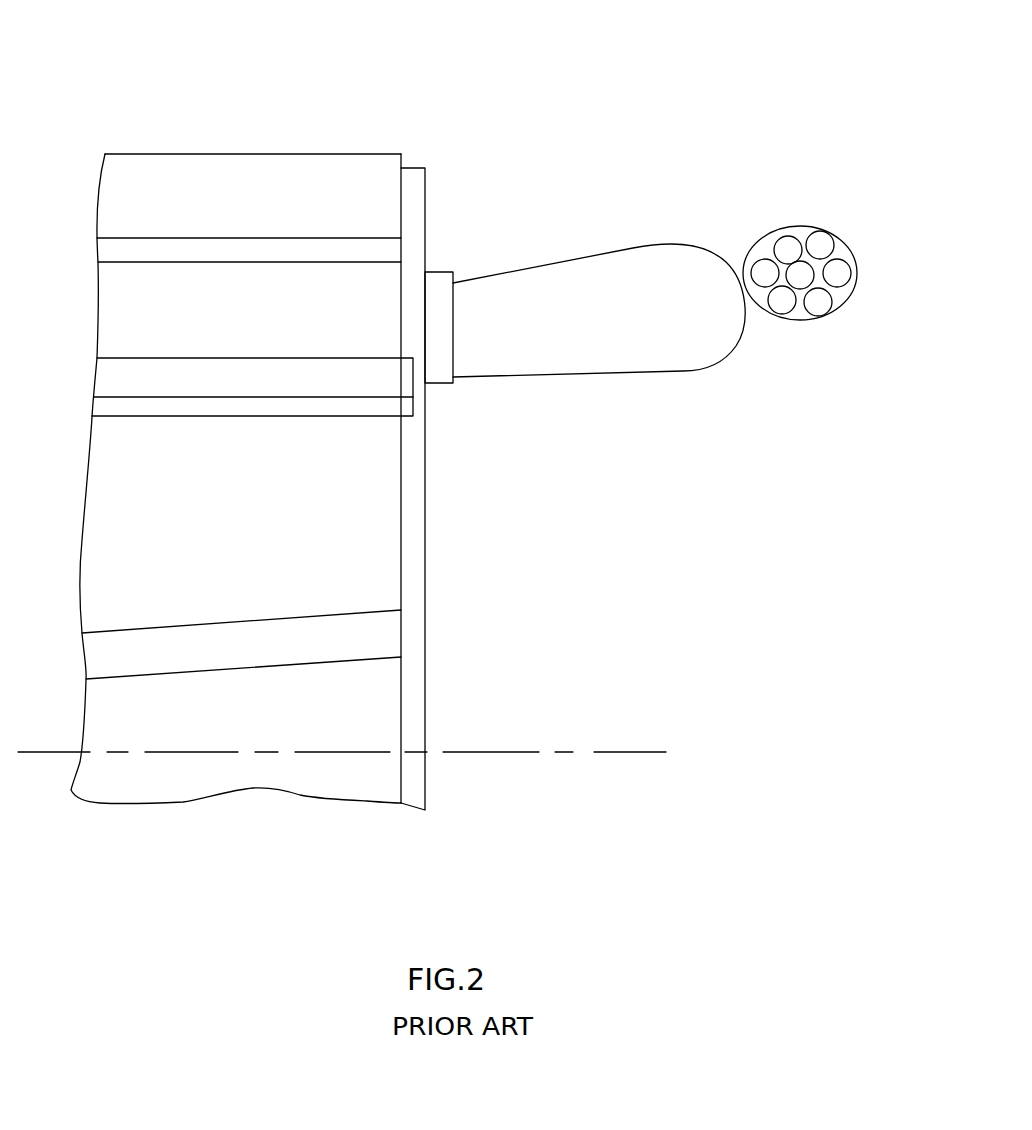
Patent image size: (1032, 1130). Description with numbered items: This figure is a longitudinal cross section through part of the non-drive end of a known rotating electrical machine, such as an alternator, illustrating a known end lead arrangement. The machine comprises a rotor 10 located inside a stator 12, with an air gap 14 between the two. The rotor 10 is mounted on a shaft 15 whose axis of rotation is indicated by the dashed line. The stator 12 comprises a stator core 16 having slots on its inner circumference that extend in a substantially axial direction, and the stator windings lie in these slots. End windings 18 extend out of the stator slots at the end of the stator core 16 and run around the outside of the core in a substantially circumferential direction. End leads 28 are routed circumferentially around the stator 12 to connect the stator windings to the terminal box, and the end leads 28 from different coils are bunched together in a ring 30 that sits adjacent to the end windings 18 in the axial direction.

The rotor 10 is at (373, 556).
The stator 12 is at (272, 153).
The air gap 14 is at (353, 406).
The shaft 15 is at (479, 753).
The stator core 16 is at (373, 322).
The end windings 18 is at (634, 247).
The end leads 28 is at (823, 245).
The ring 30 is at (858, 273).